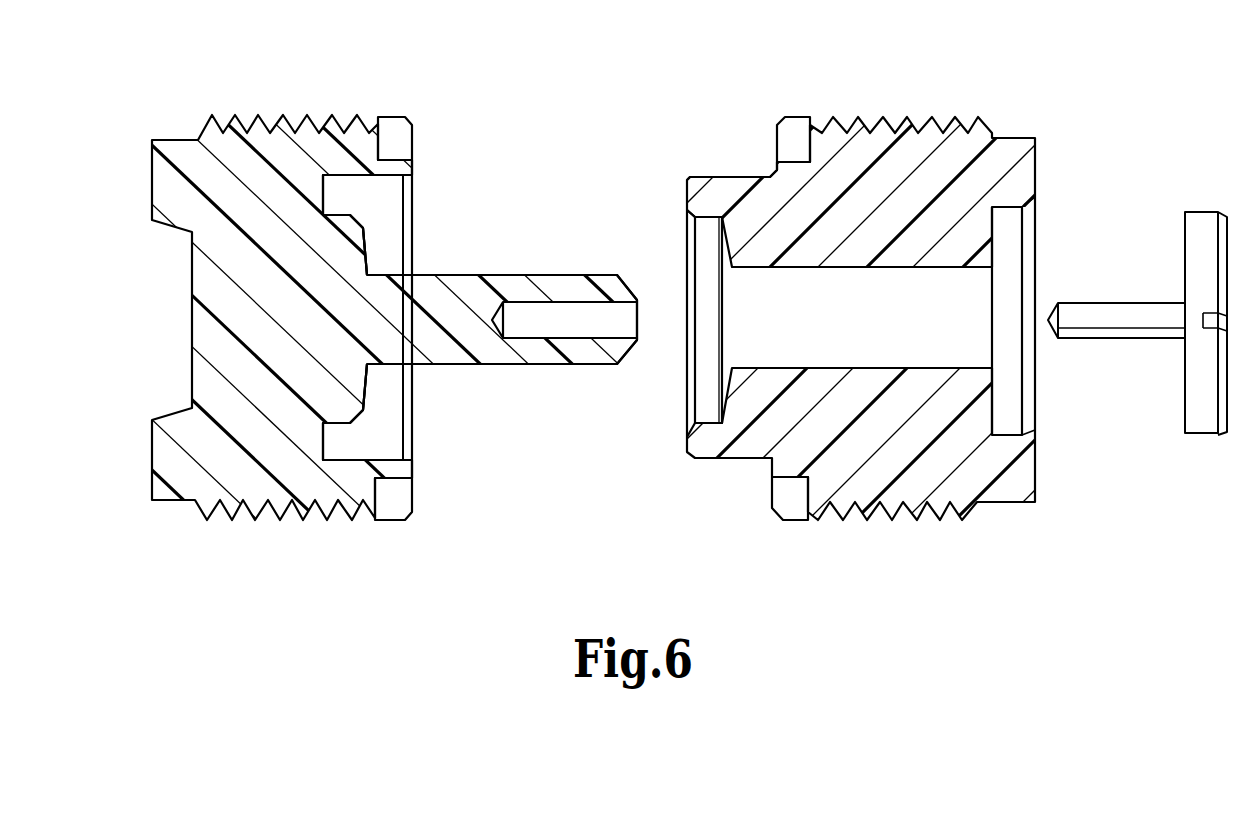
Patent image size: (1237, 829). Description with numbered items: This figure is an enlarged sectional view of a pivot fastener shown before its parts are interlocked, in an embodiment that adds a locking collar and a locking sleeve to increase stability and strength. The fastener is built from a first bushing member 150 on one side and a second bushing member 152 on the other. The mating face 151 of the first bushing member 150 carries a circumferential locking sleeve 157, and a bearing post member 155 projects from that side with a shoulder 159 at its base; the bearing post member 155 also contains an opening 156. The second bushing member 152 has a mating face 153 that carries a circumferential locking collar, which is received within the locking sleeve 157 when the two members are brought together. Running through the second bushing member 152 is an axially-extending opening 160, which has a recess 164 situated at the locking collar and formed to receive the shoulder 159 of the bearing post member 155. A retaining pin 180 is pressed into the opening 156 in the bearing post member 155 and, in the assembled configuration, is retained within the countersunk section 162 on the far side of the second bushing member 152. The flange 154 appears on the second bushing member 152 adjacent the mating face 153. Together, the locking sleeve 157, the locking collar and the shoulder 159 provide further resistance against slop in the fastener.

The first bushing member 150 is at (284, 108).
The mating face 151 is at (430, 445).
The second bushing member 152 is at (893, 102).
The mating face 153 is at (754, 491).
The flange of receptacle body 154 is at (736, 186).
The bearing post member 155 is at (560, 273).
The opening 156 is at (581, 331).
The locking sleeve 157 is at (380, 203).
The shoulder 159 is at (340, 268).
The axially-extending opening 160 is at (878, 322).
The countersunk section 162 is at (1017, 288).
The recess 164 is at (712, 263).
The retaining pin 180 is at (1112, 290).